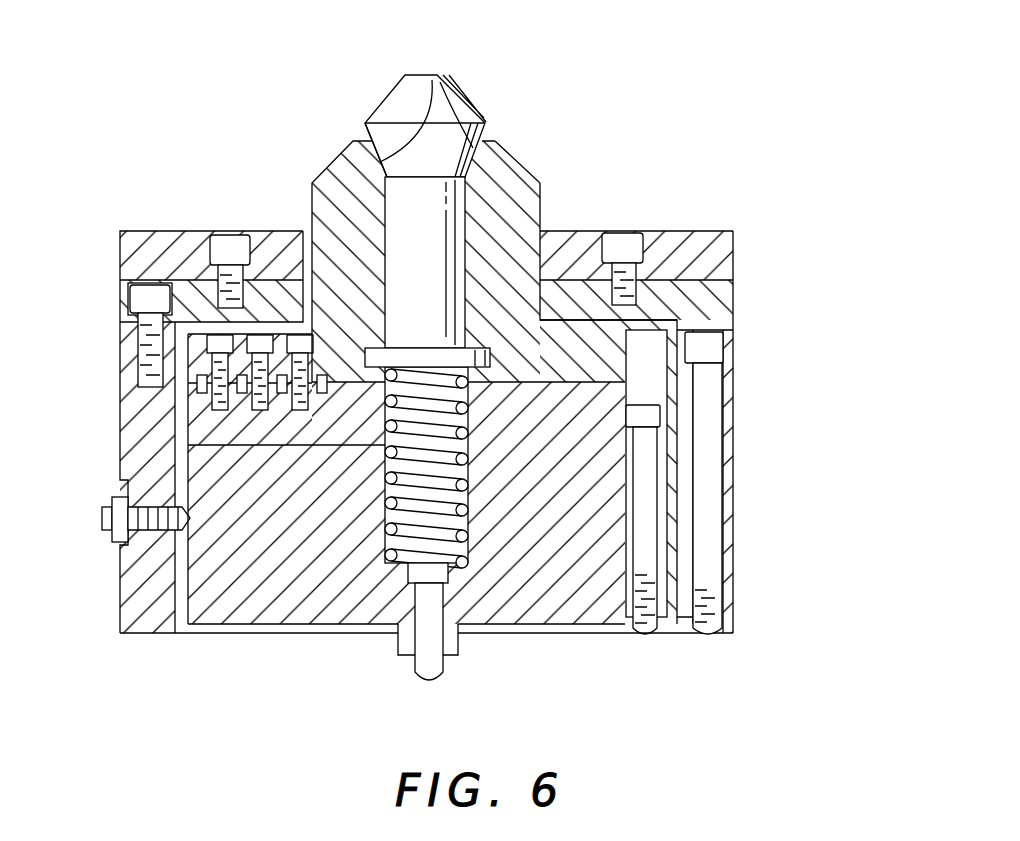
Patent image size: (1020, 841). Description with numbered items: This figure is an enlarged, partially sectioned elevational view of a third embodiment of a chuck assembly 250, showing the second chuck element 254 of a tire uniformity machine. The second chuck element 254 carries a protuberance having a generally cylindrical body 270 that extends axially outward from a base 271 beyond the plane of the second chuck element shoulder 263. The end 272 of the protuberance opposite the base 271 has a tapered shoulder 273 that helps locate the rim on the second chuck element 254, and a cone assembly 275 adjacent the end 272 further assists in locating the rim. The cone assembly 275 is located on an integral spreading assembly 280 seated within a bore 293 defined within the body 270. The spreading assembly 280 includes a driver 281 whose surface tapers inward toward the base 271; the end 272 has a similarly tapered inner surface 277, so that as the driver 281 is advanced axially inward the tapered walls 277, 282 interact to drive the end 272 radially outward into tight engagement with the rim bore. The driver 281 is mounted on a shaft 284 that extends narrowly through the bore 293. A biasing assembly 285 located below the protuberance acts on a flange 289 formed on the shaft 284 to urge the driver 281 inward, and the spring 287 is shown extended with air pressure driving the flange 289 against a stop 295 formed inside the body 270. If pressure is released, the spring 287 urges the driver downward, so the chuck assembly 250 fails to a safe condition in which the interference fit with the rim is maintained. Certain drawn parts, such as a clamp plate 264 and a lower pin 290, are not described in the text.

The chuck assembly 250 is at (234, 108).
The second chuck element 254 is at (120, 258).
The second chuck element shoulder 263 is at (702, 215).
The clamp plate 264 is at (720, 252).
The cylindrical body 270 is at (510, 230).
The base 271 is at (602, 360).
The end 272 is at (489, 132).
The tapered shoulder 273 is at (522, 158).
The cone assembly 275 is at (402, 97).
The tapered inner surface 277 is at (432, 82).
The spreading assembly 280 is at (377, 100).
The driver 281 is at (390, 134).
The tapered wall 282 is at (364, 127).
The shaft 284 is at (412, 228).
The biasing assembly 285 is at (392, 512).
The spring 287 is at (463, 483).
The flange 289 is at (380, 358).
The locating pin 290 is at (420, 660).
The bore 293 is at (388, 297).
The stop 295 is at (490, 360).